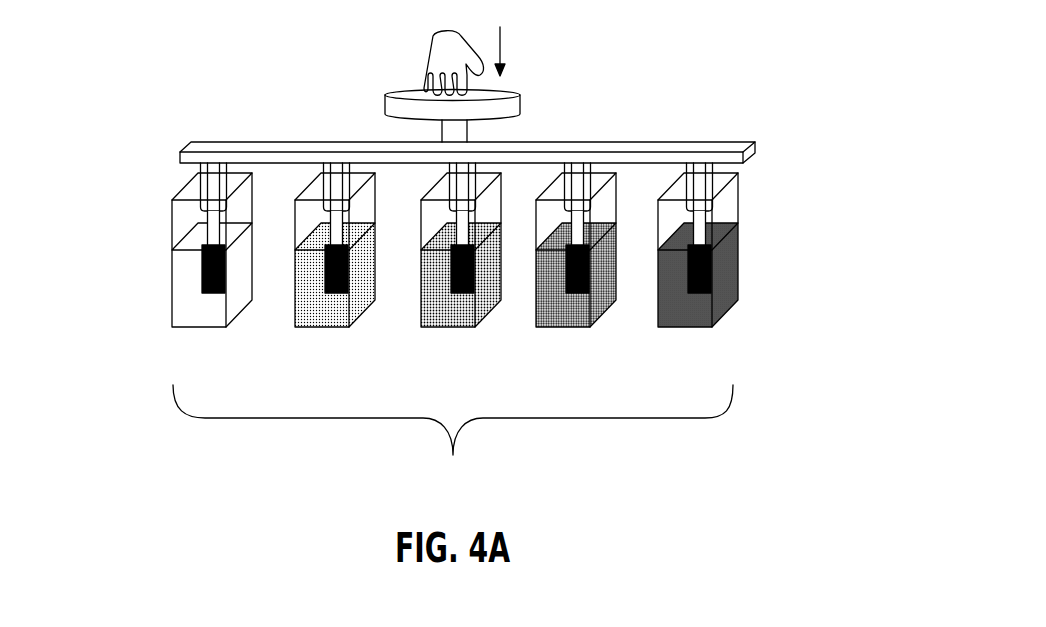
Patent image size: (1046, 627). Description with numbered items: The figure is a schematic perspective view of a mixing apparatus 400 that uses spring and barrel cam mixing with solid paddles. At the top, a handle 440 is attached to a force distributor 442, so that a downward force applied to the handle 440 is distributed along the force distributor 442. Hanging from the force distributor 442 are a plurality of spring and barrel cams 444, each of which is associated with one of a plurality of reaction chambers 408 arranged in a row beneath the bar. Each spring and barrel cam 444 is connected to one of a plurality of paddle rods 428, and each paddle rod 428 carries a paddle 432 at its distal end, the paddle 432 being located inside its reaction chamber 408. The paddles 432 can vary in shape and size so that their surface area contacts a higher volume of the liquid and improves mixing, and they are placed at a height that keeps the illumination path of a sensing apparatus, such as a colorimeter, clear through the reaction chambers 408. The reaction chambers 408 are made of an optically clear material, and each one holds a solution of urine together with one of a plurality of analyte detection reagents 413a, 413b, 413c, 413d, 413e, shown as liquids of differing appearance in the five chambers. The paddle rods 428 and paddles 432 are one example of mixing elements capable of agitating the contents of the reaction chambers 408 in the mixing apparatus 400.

The mixing apparatus 400 is at (102, 72).
The reaction chambers 408 is at (453, 439).
The analyte detection reagent 413a is at (693, 315).
The analyte detection reagent 413b is at (567, 315).
The analyte detection reagent 413c is at (452, 315).
The analyte detection reagent 413d is at (323, 315).
The analyte detection reagent 413e is at (200, 315).
The paddle rod 428 is at (590, 218).
The paddle 432 is at (200, 273).
The handle 440 is at (517, 106).
The force distributor 442 is at (707, 150).
The spring and barrel cam 444 is at (202, 188).